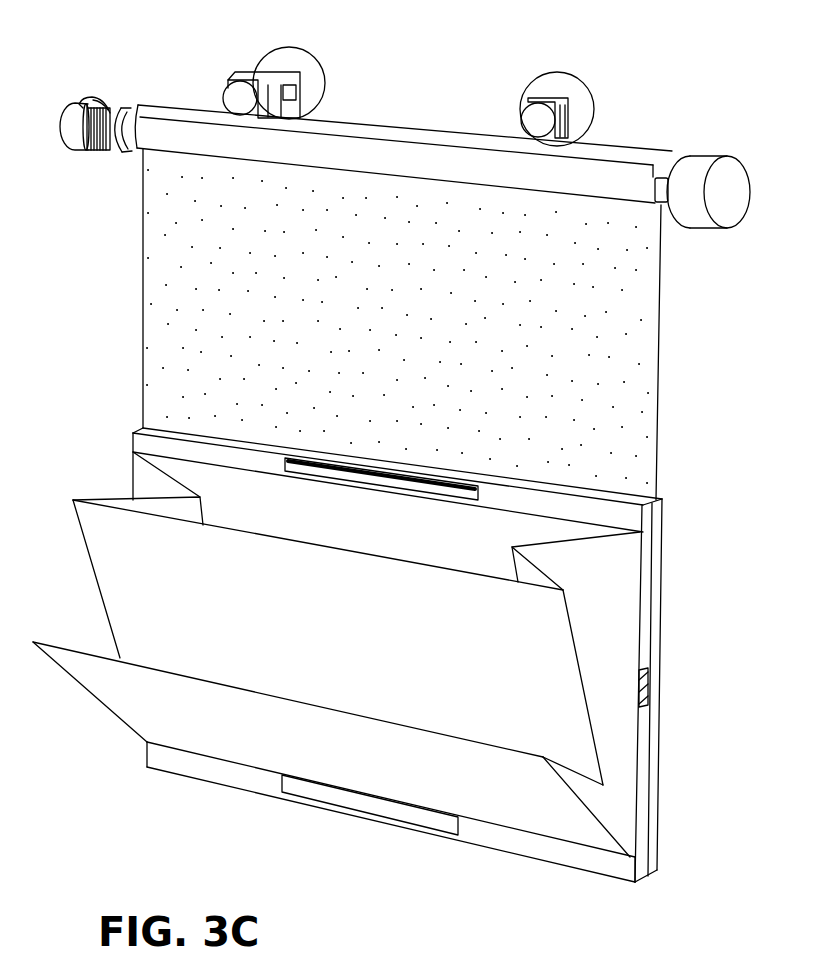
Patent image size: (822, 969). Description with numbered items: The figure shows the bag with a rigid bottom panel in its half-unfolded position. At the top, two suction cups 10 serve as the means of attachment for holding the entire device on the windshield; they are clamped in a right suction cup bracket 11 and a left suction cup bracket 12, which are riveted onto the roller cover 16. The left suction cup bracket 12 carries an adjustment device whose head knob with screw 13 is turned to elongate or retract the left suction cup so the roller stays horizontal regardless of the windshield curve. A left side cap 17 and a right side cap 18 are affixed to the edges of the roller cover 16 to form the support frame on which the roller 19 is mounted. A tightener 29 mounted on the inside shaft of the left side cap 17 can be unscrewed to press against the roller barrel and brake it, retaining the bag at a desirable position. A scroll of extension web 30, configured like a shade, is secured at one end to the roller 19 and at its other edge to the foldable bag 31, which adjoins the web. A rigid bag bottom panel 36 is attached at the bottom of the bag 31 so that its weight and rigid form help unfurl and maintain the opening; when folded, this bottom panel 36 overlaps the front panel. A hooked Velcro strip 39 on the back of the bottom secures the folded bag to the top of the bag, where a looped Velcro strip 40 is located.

The suction cup 10 is at (312, 68).
The right suction cup bracket 11 is at (573, 105).
The left suction cup bracket 12 is at (253, 73).
The adjustment head knob with screw 13 is at (228, 92).
The roller cover 16 is at (625, 155).
The left side cap 17 is at (72, 120).
The right side cap 18 is at (720, 178).
The roller 19 is at (192, 138).
The tightener 29 is at (108, 108).
The extension web 30 is at (155, 278).
The foldable bag 31 is at (117, 555).
The bag bottom panel 36 is at (128, 695).
The hooked Velcro strip 39 is at (320, 795).
The looped Velcro strip 40 is at (348, 477).